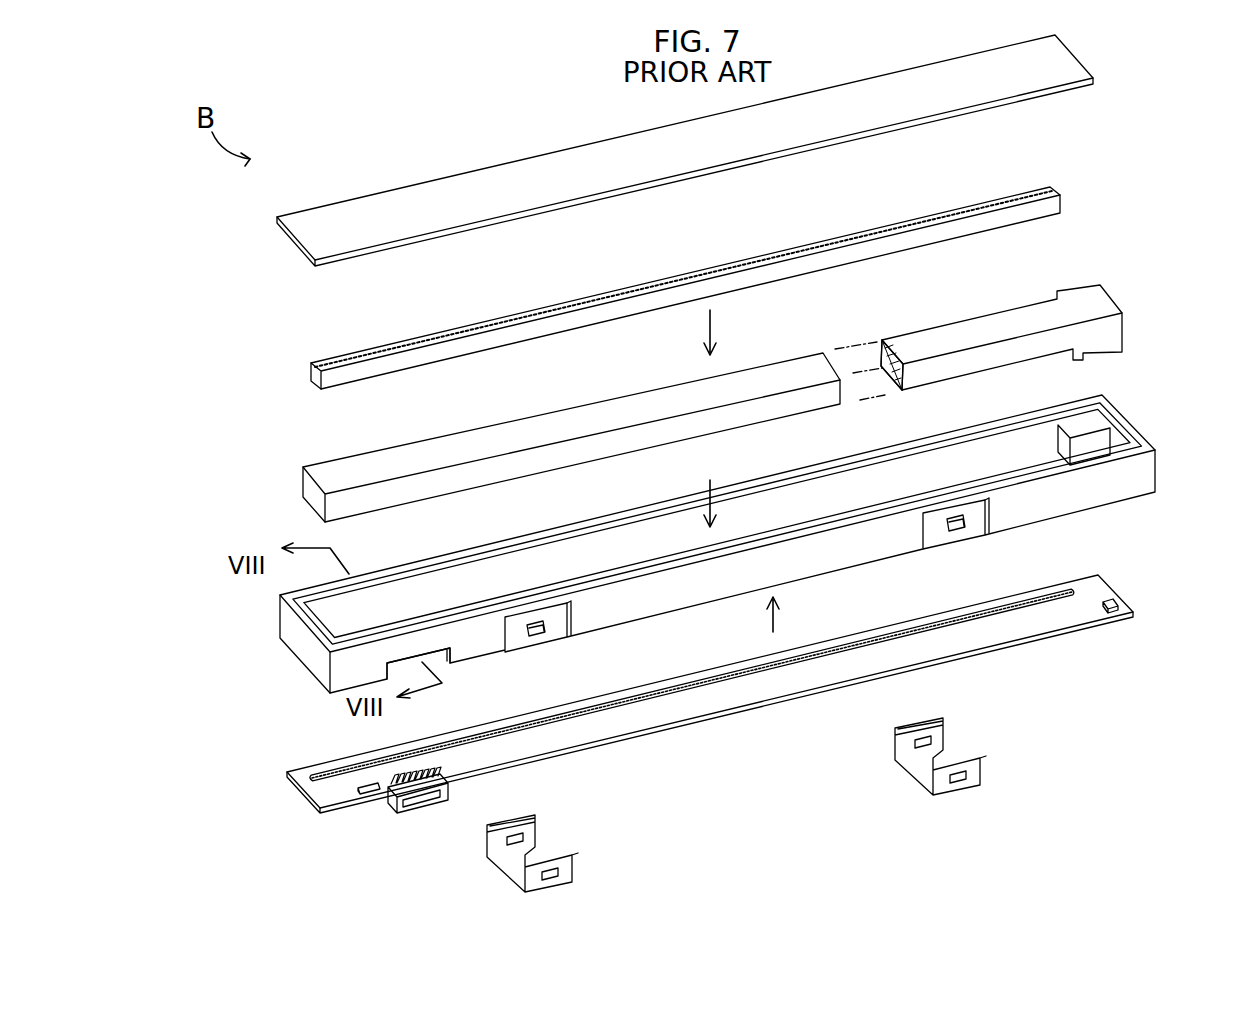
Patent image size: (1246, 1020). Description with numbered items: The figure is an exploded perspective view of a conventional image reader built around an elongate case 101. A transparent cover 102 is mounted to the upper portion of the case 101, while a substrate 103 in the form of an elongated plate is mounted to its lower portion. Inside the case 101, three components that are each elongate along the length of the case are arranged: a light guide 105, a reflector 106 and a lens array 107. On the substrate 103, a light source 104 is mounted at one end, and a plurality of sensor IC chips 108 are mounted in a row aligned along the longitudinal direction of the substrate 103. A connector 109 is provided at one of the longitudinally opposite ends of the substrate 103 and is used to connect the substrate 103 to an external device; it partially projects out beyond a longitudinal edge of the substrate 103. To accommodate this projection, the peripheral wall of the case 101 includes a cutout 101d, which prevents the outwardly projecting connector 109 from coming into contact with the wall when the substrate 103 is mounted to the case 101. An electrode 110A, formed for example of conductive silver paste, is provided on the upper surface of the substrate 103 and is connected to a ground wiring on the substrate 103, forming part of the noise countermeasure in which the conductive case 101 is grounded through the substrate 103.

The case 101 is at (757, 549).
The cutout 101d is at (447, 653).
The transparent cover 102 is at (1070, 58).
The substrate 103 is at (744, 729).
The light source 104 is at (1110, 612).
The light guide 105 is at (882, 338).
The reflector 106 is at (1110, 295).
The lens array 107 is at (1065, 204).
The sensor IC chips 108 is at (807, 655).
The connector 109 is at (396, 812).
The electrode 110A is at (366, 795).